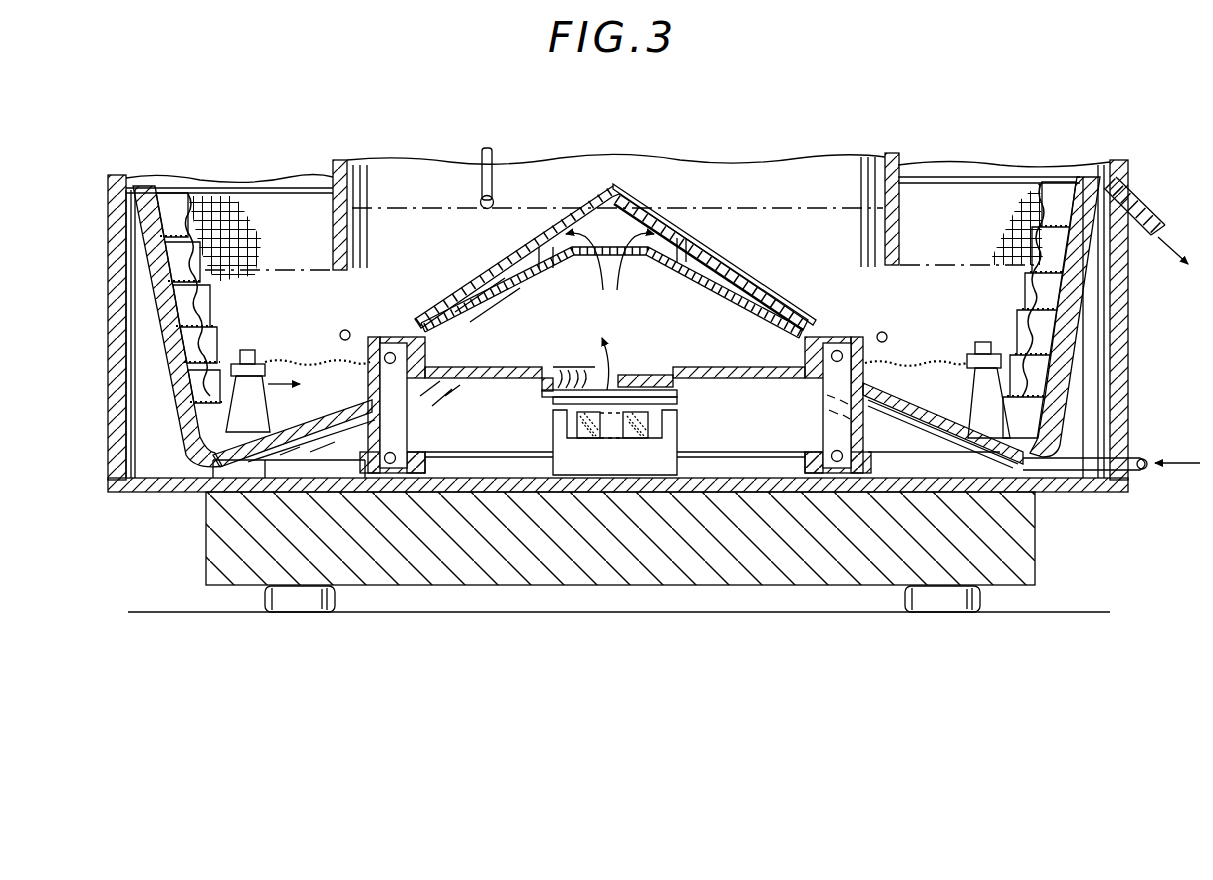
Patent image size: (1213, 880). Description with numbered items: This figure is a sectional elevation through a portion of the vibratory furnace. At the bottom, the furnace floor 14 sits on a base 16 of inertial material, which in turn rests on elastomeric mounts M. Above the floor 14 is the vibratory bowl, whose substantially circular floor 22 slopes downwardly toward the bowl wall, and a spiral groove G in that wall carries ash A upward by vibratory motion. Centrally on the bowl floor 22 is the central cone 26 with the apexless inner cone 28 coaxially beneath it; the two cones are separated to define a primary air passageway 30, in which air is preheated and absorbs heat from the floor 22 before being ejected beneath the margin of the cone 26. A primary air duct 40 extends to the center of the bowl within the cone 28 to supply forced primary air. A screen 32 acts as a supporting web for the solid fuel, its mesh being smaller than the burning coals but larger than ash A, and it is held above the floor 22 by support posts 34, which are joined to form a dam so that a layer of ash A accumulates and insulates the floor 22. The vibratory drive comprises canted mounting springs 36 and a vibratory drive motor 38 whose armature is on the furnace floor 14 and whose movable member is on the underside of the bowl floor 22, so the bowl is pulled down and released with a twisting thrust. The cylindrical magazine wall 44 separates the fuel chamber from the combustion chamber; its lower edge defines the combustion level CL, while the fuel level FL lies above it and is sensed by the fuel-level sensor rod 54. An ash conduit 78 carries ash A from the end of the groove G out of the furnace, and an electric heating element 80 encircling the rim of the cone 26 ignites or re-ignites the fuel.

The floor 14 is at (180, 492).
The base 16 is at (205, 585).
The floor of the bowl 22 is at (606, 451).
The central cone 26 is at (738, 263).
The inner cone 28 is at (757, 279).
The primary air passageway 30 is at (697, 251).
The screen 32 is at (256, 215).
The support posts 34 is at (990, 410).
The mounting springs 36 is at (415, 433).
The vibratory drive motor 38 is at (672, 431).
The primary air duct 40 is at (1085, 472).
The magazine wall 44 is at (350, 162).
The fuel-level sensor rod 54 is at (493, 150).
The ash conduit 78 is at (1144, 206).
The electric heating element 80 is at (341, 331).
The ash A is at (1088, 172).
The spiral groove G is at (187, 420).
The fuel level FL is at (849, 206).
The combustion level CL is at (979, 262).
The mounts M is at (336, 598).